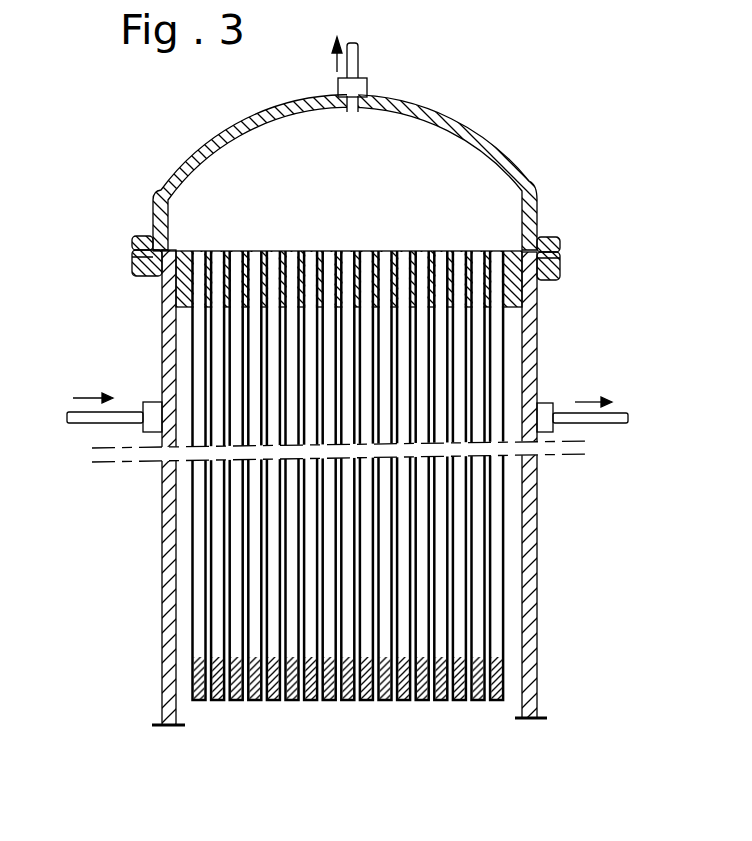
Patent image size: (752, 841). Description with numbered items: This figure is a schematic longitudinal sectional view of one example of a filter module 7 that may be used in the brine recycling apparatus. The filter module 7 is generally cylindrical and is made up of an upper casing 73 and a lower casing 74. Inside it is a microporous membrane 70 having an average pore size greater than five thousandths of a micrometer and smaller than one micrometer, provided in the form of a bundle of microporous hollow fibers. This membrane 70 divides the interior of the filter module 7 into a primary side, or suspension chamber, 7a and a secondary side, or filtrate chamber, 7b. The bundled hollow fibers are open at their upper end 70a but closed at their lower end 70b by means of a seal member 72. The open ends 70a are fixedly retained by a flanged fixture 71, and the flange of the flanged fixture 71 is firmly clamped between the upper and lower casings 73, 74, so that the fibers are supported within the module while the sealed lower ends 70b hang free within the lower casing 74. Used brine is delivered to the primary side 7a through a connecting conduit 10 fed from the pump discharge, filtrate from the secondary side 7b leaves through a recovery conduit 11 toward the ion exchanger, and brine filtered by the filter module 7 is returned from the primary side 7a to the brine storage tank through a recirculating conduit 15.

The filter module 7 is at (354, 405).
The primary side 7a is at (348, 487).
The secondary side 7b is at (380, 173).
The connecting conduit 10 is at (85, 423).
The recovery conduit 11 is at (358, 62).
The recirculating conduit 15 is at (618, 412).
The microporous membrane 70 is at (507, 510).
The upper end 70a is at (362, 250).
The lower end 70b is at (353, 702).
The flanged fixture 71 is at (507, 288).
The seal member 72 is at (507, 680).
The upper casing 73 is at (520, 167).
The lower casing 74 is at (535, 587).